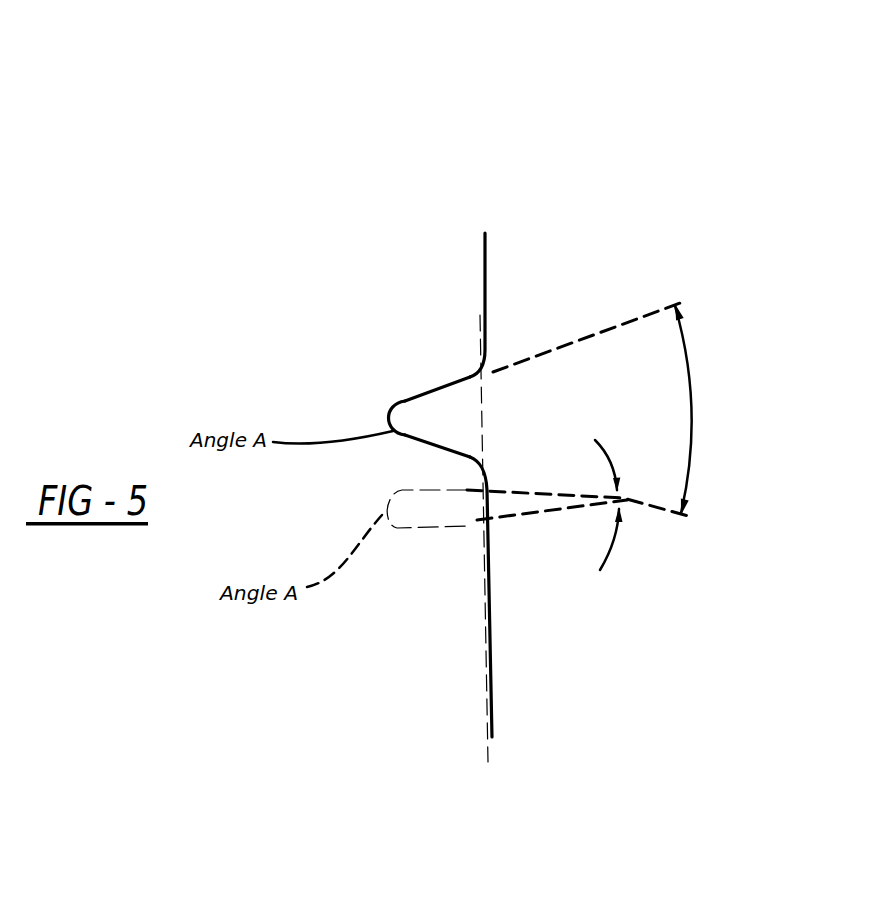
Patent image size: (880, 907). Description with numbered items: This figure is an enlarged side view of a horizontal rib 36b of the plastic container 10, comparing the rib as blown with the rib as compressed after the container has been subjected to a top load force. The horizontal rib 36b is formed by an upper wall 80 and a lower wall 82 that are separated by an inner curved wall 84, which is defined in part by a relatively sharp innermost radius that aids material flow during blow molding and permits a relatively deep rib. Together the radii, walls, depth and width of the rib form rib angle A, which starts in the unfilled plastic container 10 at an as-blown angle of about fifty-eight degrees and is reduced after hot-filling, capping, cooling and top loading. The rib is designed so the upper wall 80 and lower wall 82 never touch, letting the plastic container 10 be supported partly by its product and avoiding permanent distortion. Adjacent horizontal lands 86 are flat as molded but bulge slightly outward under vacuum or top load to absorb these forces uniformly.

The plastic container 10 is at (665, 120).
The horizontal rib 36b is at (648, 192).
The upper wall 80 is at (443, 385).
The lower wall 82 is at (413, 447).
The inner curved wall 84 is at (393, 406).
The horizontal land 86 is at (485, 258).